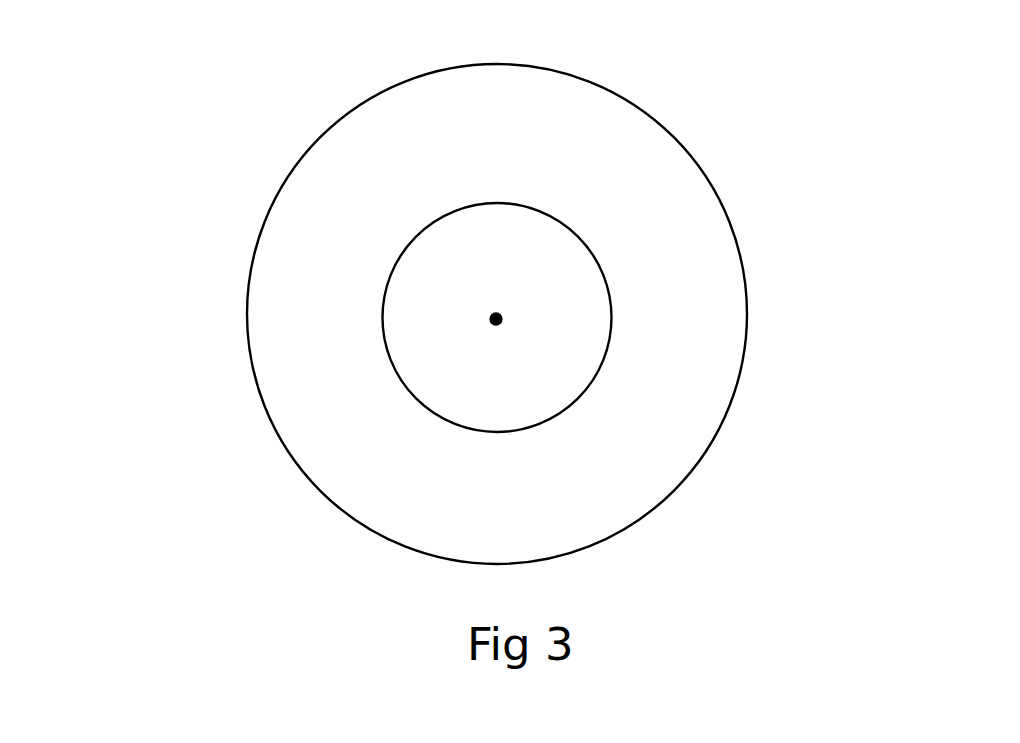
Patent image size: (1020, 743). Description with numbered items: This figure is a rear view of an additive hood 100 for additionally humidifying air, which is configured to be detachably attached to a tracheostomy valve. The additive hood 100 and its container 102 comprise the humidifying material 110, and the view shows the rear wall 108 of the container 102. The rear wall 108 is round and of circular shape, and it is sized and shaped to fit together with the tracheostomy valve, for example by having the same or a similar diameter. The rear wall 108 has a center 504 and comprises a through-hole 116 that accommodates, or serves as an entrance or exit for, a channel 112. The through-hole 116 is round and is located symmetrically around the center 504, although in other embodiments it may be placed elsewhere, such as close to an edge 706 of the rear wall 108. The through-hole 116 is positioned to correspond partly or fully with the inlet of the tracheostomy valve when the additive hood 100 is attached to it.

The additive hood 100 is at (390, 311).
The container 102 is at (390, 311).
The material 110 is at (277, 122).
The rear wall 108 is at (435, 288).
The edge 706 is at (390, 311).
The center 504 is at (496, 319).
The channel 112 is at (589, 405).
The through-hole 116 is at (527, 348).